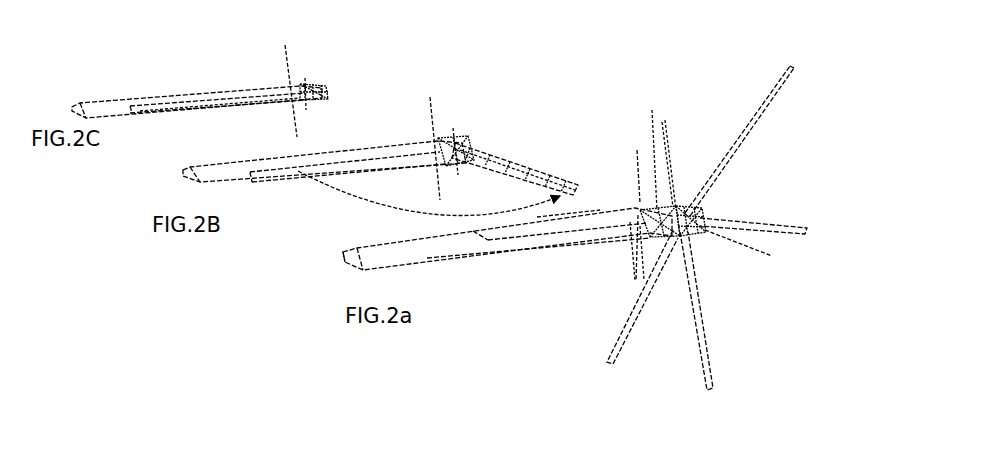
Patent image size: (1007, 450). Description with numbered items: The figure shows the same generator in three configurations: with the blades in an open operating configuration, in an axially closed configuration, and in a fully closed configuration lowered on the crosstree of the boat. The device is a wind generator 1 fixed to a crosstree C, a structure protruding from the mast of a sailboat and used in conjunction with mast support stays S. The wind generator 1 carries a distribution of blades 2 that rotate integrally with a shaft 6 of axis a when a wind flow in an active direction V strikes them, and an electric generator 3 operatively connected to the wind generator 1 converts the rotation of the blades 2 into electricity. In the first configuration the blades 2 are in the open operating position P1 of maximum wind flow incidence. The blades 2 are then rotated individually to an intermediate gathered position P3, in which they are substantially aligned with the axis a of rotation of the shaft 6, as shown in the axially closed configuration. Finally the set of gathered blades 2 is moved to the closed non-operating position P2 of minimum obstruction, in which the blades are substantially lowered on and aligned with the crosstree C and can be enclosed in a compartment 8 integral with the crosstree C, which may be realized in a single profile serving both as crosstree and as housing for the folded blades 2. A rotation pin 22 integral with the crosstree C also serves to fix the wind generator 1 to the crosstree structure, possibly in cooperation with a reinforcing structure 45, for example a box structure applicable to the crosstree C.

In FIG. 2A, the wind generator 1 is at (721, 197).
In FIG. 2C, the blades 2 is at (215, 106).
In FIG. 2B, the blades 2 is at (524, 167).
In FIG. 2A, the blades 2 is at (633, 300).
In FIG. 2C, the electric generator 3 is at (326, 89).
In FIG. 2B, the electric generator 3 is at (470, 143).
In FIG. 2A, the electric generator 3 is at (660, 221).
In FIG. 2A, the shaft 6 is at (691, 235).
In FIG. 2C, the compartment 8 is at (160, 101).
In FIG. 2B, the compartment 8 is at (372, 160).
In FIG. 2A, the compartment 8 is at (512, 249).
In FIG. 2C, the rotation pin 22 is at (307, 84).
In FIG. 2B, the rotation pin 22 is at (460, 140).
In FIG. 2A, the rotation pin 22 is at (652, 149).
In FIG. 2A, the reinforcing structure 45 is at (662, 203).
In FIG. 2C, the mast support stays S is at (297, 71).
In FIG. 2B, the mast support stays S is at (442, 128).
In FIG. 2A, the mast support stays S is at (637, 177).
In FIG. 2C, the crosstree C is at (250, 86).
In FIG. 2B, the crosstree C is at (395, 147).
In FIG. 2A, the crosstree C is at (603, 213).
In FIG. 2A, the active direction V is at (823, 335).
In FIG. 2A, the axis a is at (756, 256).
In FIG. 2A, the open operating position P1 is at (812, 164).
In FIG. 2C, the closed non-operating position P2 is at (290, 71).
In FIG. 2B, the intermediate gathered position P3 is at (532, 95).